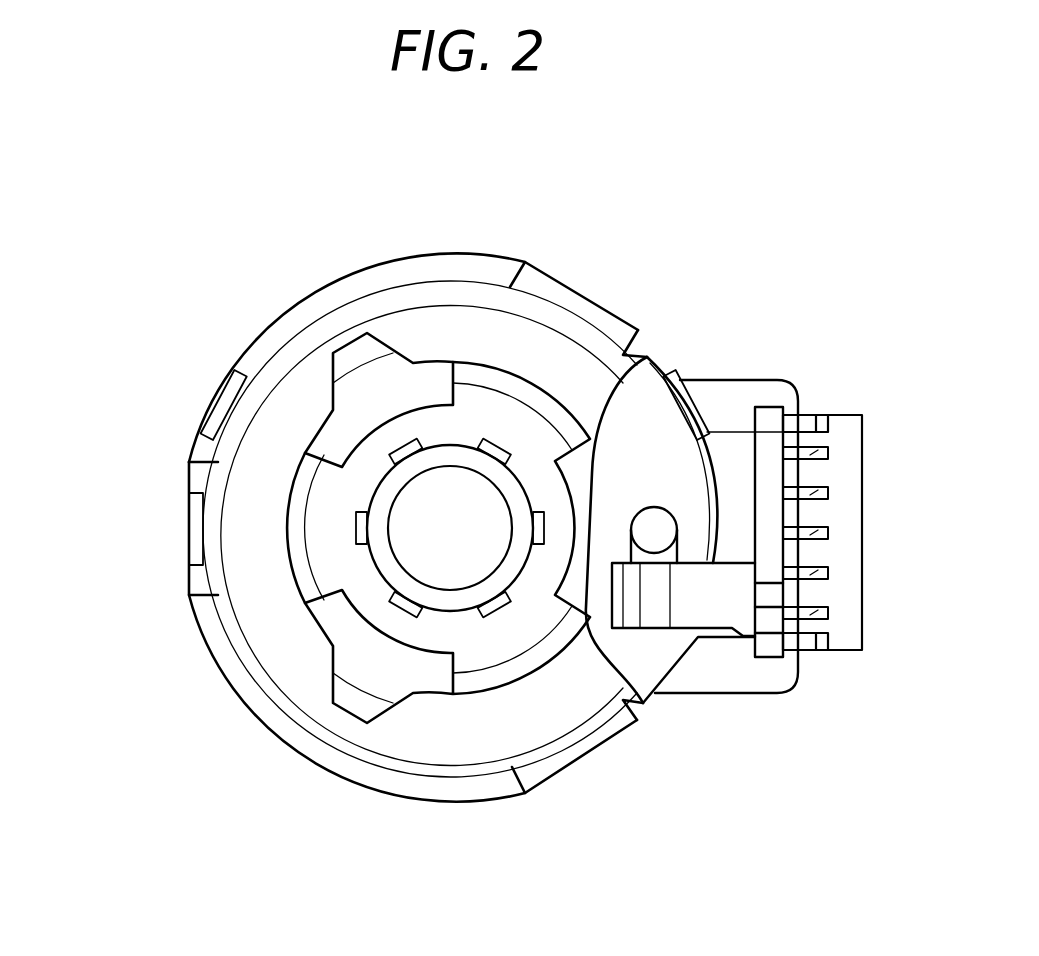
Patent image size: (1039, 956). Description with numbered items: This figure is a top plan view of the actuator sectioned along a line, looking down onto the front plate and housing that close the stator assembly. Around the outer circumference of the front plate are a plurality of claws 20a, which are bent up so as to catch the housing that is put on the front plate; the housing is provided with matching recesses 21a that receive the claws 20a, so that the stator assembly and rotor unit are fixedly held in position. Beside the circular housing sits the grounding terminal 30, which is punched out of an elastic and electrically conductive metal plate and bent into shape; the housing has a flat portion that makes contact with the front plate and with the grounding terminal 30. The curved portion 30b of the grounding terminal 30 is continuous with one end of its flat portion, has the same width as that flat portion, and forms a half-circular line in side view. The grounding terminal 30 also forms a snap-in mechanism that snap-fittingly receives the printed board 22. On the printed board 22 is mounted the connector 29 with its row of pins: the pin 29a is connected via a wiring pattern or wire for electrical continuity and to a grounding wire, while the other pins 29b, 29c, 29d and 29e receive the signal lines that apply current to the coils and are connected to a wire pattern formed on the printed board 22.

The claws 20a is at (572, 284).
The recesses 21a is at (625, 318).
The printed board 22 is at (772, 413).
The connector 29 is at (862, 637).
The pin 29a is at (828, 609).
The pin 29b is at (828, 569).
The pin 29c is at (828, 529).
The pin 29d is at (828, 489).
The pin 29e is at (828, 450).
The grounding terminal 30 is at (702, 593).
The curved portion 30b is at (632, 615).